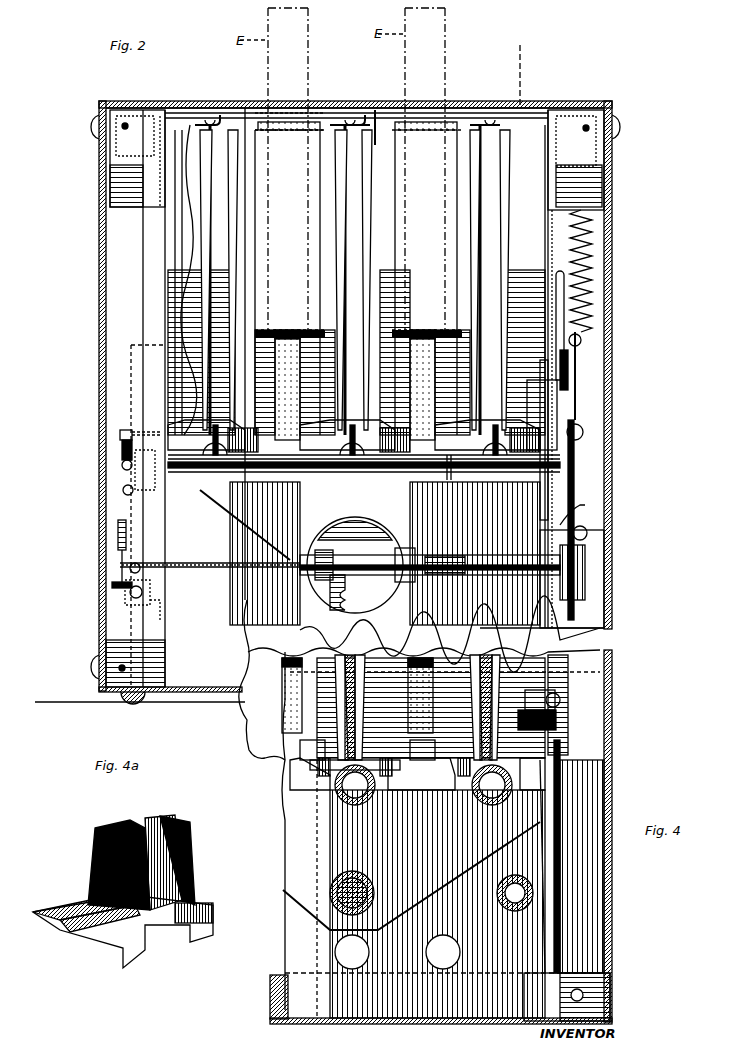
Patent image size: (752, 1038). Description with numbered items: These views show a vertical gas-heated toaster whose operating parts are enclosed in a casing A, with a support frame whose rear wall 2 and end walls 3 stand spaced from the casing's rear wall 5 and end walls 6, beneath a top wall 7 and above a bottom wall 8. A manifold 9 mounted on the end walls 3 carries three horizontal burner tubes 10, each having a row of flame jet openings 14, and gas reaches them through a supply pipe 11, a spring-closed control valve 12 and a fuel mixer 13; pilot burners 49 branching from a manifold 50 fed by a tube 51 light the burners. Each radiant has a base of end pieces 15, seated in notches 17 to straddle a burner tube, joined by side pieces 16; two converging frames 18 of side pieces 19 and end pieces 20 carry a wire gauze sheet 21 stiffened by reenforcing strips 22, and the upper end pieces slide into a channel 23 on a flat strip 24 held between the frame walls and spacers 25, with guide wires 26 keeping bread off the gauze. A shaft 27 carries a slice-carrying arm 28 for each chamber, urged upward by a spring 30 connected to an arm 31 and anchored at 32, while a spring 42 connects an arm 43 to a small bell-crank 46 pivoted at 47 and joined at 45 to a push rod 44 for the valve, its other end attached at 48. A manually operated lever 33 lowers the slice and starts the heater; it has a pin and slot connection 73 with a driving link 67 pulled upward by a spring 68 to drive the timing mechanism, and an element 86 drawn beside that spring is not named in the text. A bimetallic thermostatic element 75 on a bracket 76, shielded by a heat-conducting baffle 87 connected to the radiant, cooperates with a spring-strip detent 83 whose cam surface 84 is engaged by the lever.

In FIG. 2, the rear wall 2 is at (382, 133).
In FIG. 4, the rear wall 2 is at (301, 689).
In FIG. 2, the end walls 3 is at (172, 265).
In FIG. 4, the end walls 3 is at (560, 690).
In FIG. 2, the rear wall of casing 5 is at (105, 298).
In FIG. 4, the rear wall of casing 5 is at (285, 920).
In FIG. 2, the end walls of casing 6 is at (105, 330).
In FIG. 4, the end walls of casing 6 is at (608, 950).
In FIG. 2, the top wall 7 is at (570, 106).
In FIG. 2, the bottom wall 8 is at (190, 702).
In FIG. 2, the manifold 9 is at (232, 510).
In FIG. 4, the manifold 9 is at (290, 845).
In FIG. 2, the burner tubes 10 is at (500, 452).
In FIG. 4, the burner tubes 10 is at (340, 795).
In FIG. 2, the supply pipe 11 is at (540, 575).
In FIG. 4, the supply pipe 11 is at (530, 898).
In FIG. 2, the control valve 12 is at (312, 548).
In FIG. 2, the fuel mixer 13 is at (530, 70).
In FIG. 2, the flame jet openings 14 is at (375, 70).
In FIG. 4, the flame jet openings 14 is at (400, 630).
In FIG. 2, the end pieces 15 is at (185, 428).
In FIG. 4, the end pieces 15 is at (318, 784).
In FIG. 4A, the end pieces 15 is at (158, 932).
In FIG. 4, the side pieces 16 is at (318, 764).
In FIG. 4A, the side pieces 16 is at (55, 915).
In FIG. 2, the notches 17 is at (341, 208).
In FIG. 4, the notches 17 is at (345, 656).
In FIG. 4A, the notches 17 is at (88, 882).
In FIG. 2, the frames 18 is at (240, 268).
In FIG. 4, the frames 18 is at (290, 710).
In FIG. 4A, the frames 18 is at (95, 862).
In FIG. 2, the side pieces of frame 19 is at (230, 213).
In FIG. 4A, the side pieces of frame 19 is at (180, 855).
In FIG. 2, the end pieces of frame 20 is at (240, 133).
In FIG. 4, the end pieces of frame 20 is at (310, 768).
In FIG. 4A, the end pieces of frame 20 is at (100, 930).
In FIG. 2, the sheet of wire gauze 21 is at (238, 178).
In FIG. 4, the sheet of wire gauze 21 is at (338, 656).
In FIG. 4A, the sheet of wire gauze 21 is at (98, 838).
In FIG. 4, the reenforcing strips 22 is at (300, 745).
In FIG. 2, the channel 23 is at (205, 120).
In FIG. 4, the channel 23 is at (508, 633).
In FIG. 2, the flat strip 24 is at (226, 122).
In FIG. 2, the spacers 25 is at (320, 118).
In FIG. 2, the guide wires 26 is at (265, 120).
In FIG. 2, the shaft 27 is at (130, 480).
In FIG. 2, the slice-carrying arm 28 is at (290, 330).
In FIG. 4, the slice-carrying arm 28 is at (288, 658).
In FIG. 2, the tension spring 30 is at (120, 455).
In FIG. 2, the arm 31 is at (122, 466).
In FIG. 2, the fixed support connection 32 is at (118, 433).
In FIG. 2, the manually operated lever 33 is at (576, 372).
In FIG. 2, the tension spring 42 is at (116, 535).
In FIG. 2, the arm 43 is at (125, 500).
In FIG. 2, the push rod 44 is at (200, 570).
In FIG. 2, the pivot connection 45 is at (130, 568).
In FIG. 2, the small bell-crank 46 is at (112, 585).
In FIG. 2, the pivot 47 is at (130, 594).
In FIG. 2, the spring connection 48 is at (135, 603).
In FIG. 2, the pilot burners 49 is at (228, 452).
In FIG. 2, the manifold 50 is at (200, 488).
In FIG. 2, the tube 51 is at (447, 475).
In FIG. 2, the driving link 67 is at (580, 445).
In FIG. 2, the tension spring 68 is at (590, 255).
In FIG. 2, the pin and slot connection 73 is at (583, 430).
In FIG. 2, the bimetallic thermostatic element 75 is at (575, 403).
In FIG. 4, the bimetallic thermostatic element 75 is at (562, 738).
In FIG. 2, the bracket 76 is at (560, 386).
In FIG. 4, the bracket 76 is at (565, 708).
In FIG. 2, the detent 83 is at (588, 533).
In FIG. 2, the cam surface 84 is at (585, 508).
In FIG. 2, the rod 86 is at (585, 305).
In FIG. 2, the heat-conducting baffle 87 is at (580, 470).
In FIG. 4, the heat-conducting baffle 87 is at (565, 780).
In FIG. 2, the casing A is at (102, 365).
In FIG. 4, the casing A is at (285, 944).